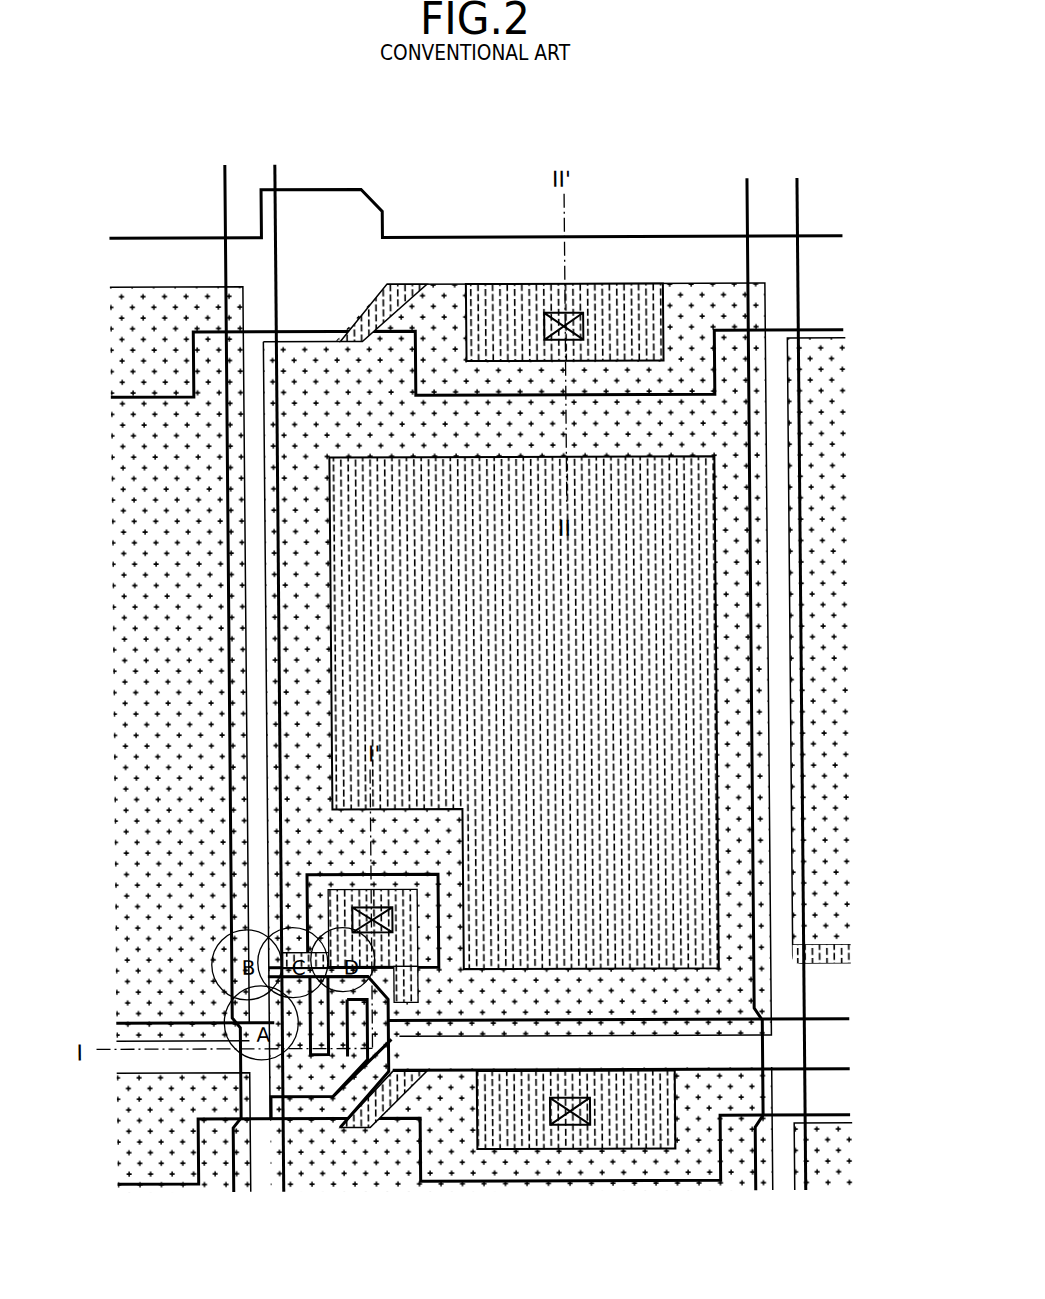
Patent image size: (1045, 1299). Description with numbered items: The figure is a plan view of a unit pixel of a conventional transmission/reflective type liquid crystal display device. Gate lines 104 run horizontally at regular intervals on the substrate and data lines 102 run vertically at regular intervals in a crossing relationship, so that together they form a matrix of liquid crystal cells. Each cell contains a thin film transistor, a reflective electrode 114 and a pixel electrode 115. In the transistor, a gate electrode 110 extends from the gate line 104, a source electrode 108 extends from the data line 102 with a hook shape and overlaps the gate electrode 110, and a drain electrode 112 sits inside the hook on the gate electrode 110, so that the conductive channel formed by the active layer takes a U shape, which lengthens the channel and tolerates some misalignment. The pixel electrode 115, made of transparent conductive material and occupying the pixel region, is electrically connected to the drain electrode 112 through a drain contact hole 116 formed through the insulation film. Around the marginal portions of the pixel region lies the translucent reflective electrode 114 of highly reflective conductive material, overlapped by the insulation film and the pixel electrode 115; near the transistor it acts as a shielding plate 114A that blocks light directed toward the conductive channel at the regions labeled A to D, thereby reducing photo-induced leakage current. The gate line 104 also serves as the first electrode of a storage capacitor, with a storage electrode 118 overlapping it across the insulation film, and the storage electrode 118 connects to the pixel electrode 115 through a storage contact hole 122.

The data line 102 is at (256, 163).
The gate line 104 is at (441, 237).
The source electrode 108 is at (372, 1090).
The gate electrode 110 is at (417, 1020).
The drain electrode 112 is at (318, 1033).
The reflective electrode 114 is at (818, 420).
The shielding plate 114A is at (268, 1085).
The pixel electrode 115 is at (630, 292).
The drain contact hole 116 is at (347, 913).
The storage electrode 118 is at (497, 283).
The storage contact hole 122 is at (577, 313).